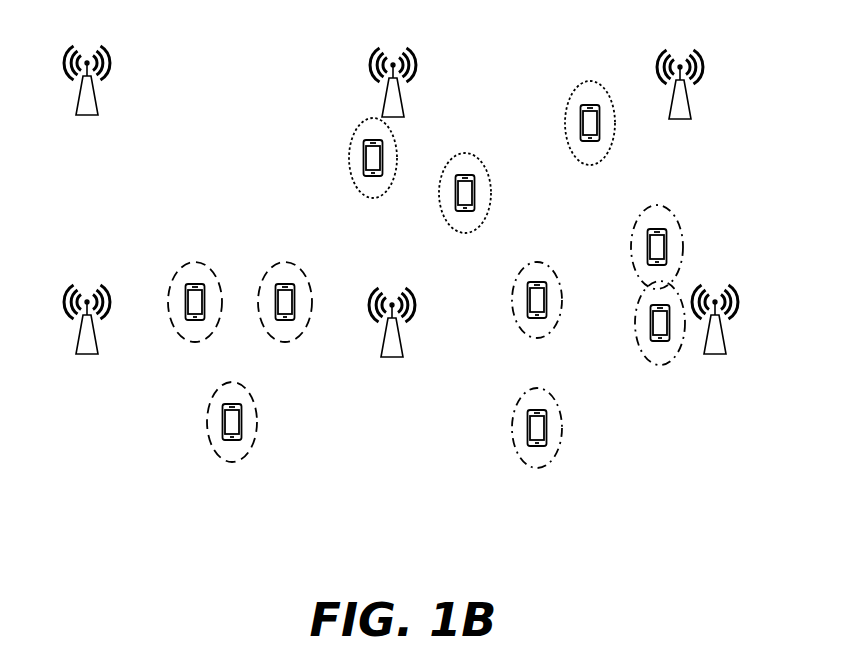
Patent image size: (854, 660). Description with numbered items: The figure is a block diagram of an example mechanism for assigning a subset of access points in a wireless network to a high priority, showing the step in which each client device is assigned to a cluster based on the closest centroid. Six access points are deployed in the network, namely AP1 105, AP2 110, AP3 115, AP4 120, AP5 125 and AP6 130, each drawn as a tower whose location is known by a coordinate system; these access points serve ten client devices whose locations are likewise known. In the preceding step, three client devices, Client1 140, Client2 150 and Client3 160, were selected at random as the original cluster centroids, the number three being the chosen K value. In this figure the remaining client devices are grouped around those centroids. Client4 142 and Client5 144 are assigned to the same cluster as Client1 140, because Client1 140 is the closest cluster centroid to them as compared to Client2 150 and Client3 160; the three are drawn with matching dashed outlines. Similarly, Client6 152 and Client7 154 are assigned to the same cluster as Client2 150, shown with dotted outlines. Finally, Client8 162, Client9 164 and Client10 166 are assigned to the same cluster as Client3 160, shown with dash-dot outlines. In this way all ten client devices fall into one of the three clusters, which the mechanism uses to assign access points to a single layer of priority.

The AP1 105 is at (72, 172).
The AP2 110 is at (332, 127).
The AP3 115 is at (702, 134).
The AP4 120 is at (72, 411).
The AP5 125 is at (378, 419).
The AP6 130 is at (702, 414).
The Client1 140 is at (180, 391).
The Client4 142 is at (273, 396).
The Client5 144 is at (217, 507).
The Client2 150 is at (520, 216).
The Client6 152 is at (290, 201).
The Client7 154 is at (545, 99).
The Client3 160 is at (535, 382).
The Client8 162 is at (717, 234).
The Client9 164 is at (632, 404).
The Client10 166 is at (558, 526).